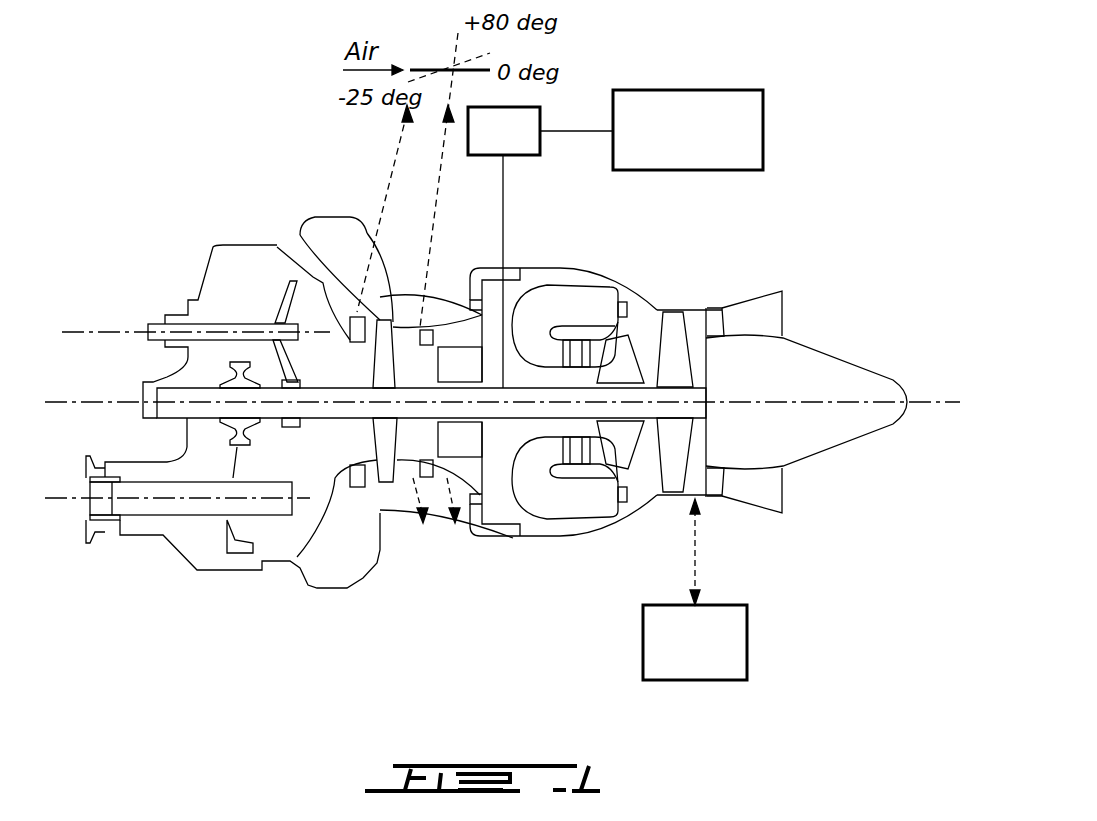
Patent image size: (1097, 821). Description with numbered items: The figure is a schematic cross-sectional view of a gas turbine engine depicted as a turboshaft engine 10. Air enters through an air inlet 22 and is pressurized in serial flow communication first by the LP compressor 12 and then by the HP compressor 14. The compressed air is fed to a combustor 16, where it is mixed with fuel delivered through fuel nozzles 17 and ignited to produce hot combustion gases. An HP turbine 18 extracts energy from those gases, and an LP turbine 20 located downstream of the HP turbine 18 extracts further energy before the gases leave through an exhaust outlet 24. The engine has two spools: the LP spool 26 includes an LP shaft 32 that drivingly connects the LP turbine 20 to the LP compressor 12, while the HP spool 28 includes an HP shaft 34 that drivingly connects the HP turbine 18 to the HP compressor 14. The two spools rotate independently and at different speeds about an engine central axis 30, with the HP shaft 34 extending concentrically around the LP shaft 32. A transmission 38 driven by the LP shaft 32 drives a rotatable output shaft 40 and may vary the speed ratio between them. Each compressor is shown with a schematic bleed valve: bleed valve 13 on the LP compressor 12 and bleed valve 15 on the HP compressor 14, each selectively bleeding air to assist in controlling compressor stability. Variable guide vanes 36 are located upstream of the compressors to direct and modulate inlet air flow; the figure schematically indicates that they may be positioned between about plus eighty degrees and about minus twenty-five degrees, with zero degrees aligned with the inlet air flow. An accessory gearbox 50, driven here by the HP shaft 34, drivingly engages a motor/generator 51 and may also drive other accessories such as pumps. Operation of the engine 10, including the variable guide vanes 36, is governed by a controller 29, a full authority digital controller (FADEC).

The turboshaft engine 10 is at (760, 232).
The LP compressor 12 is at (380, 300).
The bleed valve 13 is at (424, 530).
The HP compressor 14 is at (462, 353).
The bleed valve 15 is at (456, 530).
The combustor 16 is at (578, 305).
The fuel nozzles 17 is at (636, 296).
The HP turbine 18 is at (617, 447).
The LP turbine 20 is at (668, 306).
The air inlet 22 is at (308, 580).
The exhaust outlet 24 is at (768, 497).
The LP spool 26 is at (397, 420).
The HP spool 28 is at (497, 420).
The controller 29 is at (750, 645).
The engine central axis 30 is at (942, 395).
The LP shaft 32 is at (332, 412).
The HP shaft 34 is at (540, 413).
The variable guide vanes 36 is at (352, 340).
The transmission 38 is at (212, 437).
The output shaft 40 is at (140, 505).
The accessory gearbox 50 is at (541, 120).
The motor/generator 51 is at (690, 90).